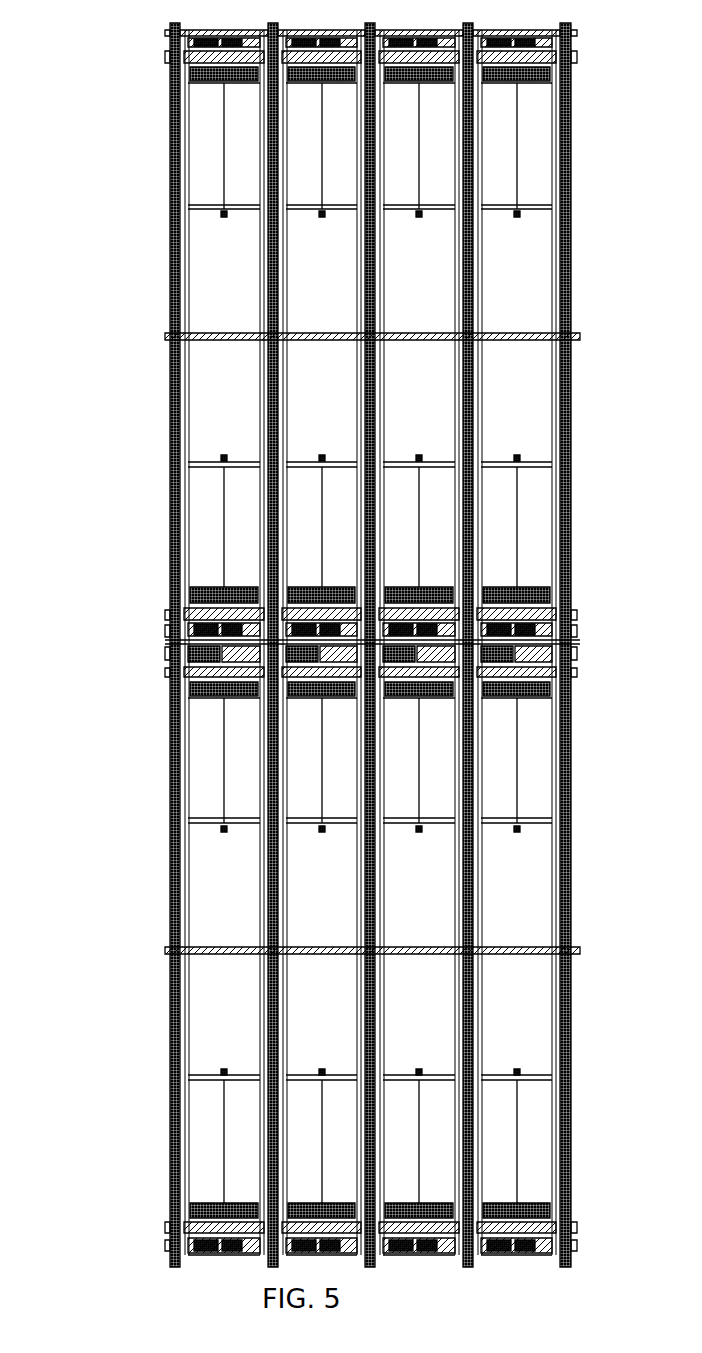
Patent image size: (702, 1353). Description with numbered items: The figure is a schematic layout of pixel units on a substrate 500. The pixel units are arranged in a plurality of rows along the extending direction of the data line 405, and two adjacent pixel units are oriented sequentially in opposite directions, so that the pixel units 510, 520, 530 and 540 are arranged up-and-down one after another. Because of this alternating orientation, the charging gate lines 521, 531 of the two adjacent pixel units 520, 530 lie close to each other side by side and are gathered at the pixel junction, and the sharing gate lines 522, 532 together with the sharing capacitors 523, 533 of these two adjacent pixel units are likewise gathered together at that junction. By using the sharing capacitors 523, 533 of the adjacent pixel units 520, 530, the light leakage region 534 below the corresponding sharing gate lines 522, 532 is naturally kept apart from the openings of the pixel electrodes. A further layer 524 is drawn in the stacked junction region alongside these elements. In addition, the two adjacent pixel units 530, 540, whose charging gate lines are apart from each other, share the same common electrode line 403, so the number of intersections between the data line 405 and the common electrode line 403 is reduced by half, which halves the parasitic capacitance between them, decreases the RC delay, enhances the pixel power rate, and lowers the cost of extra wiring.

The substrate 500 is at (72, 100).
The data line 405 is at (279, 29).
The pixel unit 510 is at (200, 103).
The pixel unit 520 is at (200, 375).
The sharing capacitor 523 is at (178, 575).
The second stacked layer 524 is at (178, 600).
The sharing gate line 522 is at (166, 617).
The charging gate line 521 is at (178, 634).
The charging gate line 531 is at (178, 657).
The sharing gate line 532 is at (172, 676).
The light leakage region 534 is at (195, 698).
The sharing capacitor 533 is at (222, 698).
The pixel unit 530 is at (200, 782).
The common electrode line 403 is at (172, 950).
The pixel unit 540 is at (200, 1033).